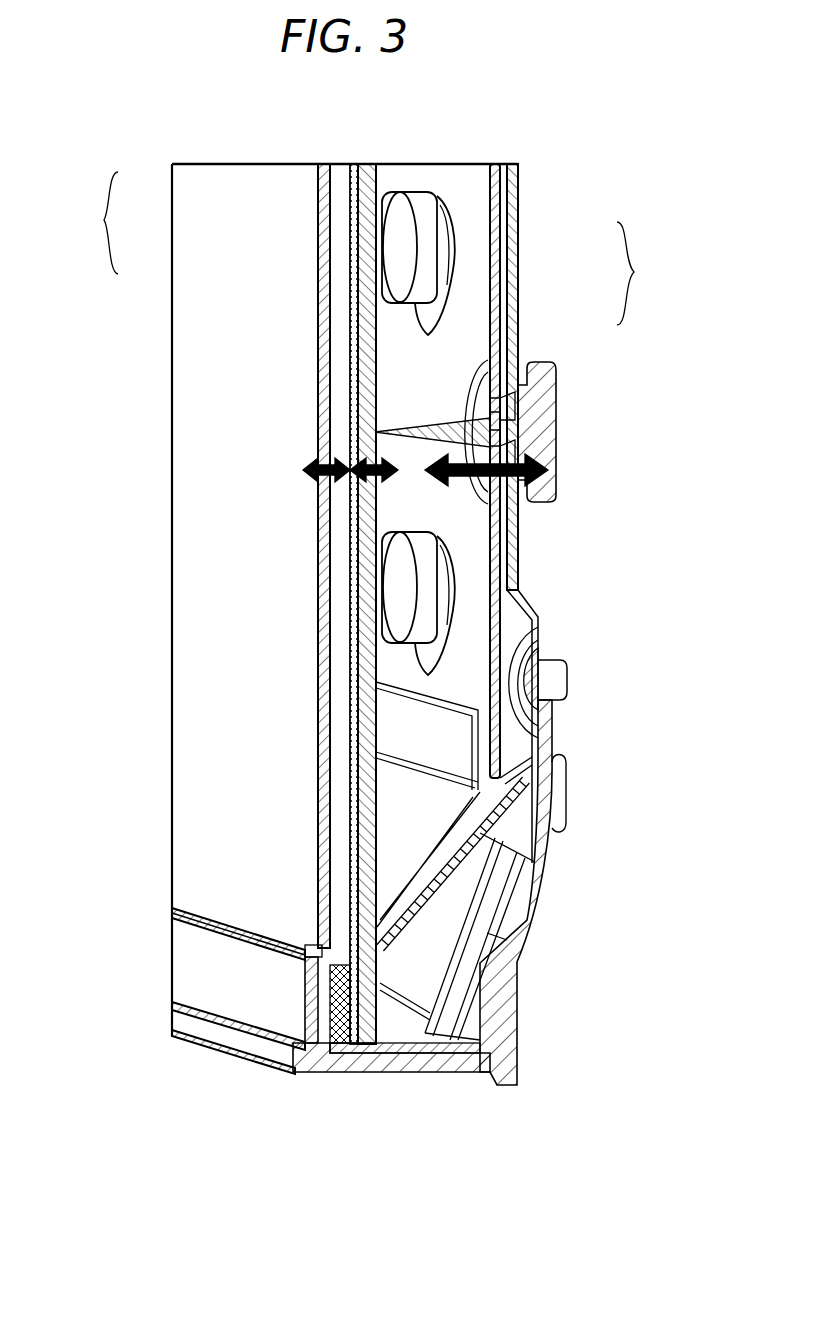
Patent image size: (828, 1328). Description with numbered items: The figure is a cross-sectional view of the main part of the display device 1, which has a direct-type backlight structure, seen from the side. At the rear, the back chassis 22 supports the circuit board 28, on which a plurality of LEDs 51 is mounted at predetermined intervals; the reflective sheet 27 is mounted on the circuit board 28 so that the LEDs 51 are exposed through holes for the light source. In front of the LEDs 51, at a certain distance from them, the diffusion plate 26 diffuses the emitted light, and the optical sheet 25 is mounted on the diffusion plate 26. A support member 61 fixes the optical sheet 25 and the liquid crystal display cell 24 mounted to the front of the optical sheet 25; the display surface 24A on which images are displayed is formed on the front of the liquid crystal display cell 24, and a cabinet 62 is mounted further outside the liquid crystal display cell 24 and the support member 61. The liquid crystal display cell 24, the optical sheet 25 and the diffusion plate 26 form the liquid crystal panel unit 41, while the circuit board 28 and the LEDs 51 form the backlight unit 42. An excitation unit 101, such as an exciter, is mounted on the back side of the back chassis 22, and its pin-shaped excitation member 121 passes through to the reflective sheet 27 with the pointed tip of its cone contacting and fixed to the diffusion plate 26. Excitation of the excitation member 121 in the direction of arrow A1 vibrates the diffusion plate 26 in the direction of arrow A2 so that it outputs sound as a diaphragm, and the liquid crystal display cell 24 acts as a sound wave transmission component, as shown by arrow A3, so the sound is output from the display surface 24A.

The display device 1 is at (361, 1150).
The back chassis 22 is at (563, 795).
The liquid crystal display cell 24 is at (318, 180).
The display surface 24A is at (212, 718).
The optical sheet 25 is at (358, 214).
The diffusion plate 26 is at (360, 246).
The reflective sheet 27 is at (467, 272).
The circuit board 28 is at (498, 300).
The liquid crystal panel unit 41 is at (90, 223).
The backlight unit 42 is at (644, 273).
The LEDs 51 is at (430, 242).
The support member 61 is at (305, 962).
The cabinet 62 is at (340, 1072).
The excitation unit 101 is at (545, 515).
The excitation member 121 is at (437, 416).
The excitation direction arrow A1 is at (554, 452).
The vibration direction arrow A2 is at (332, 510).
The sound wave transmission arrow A3 is at (300, 470).